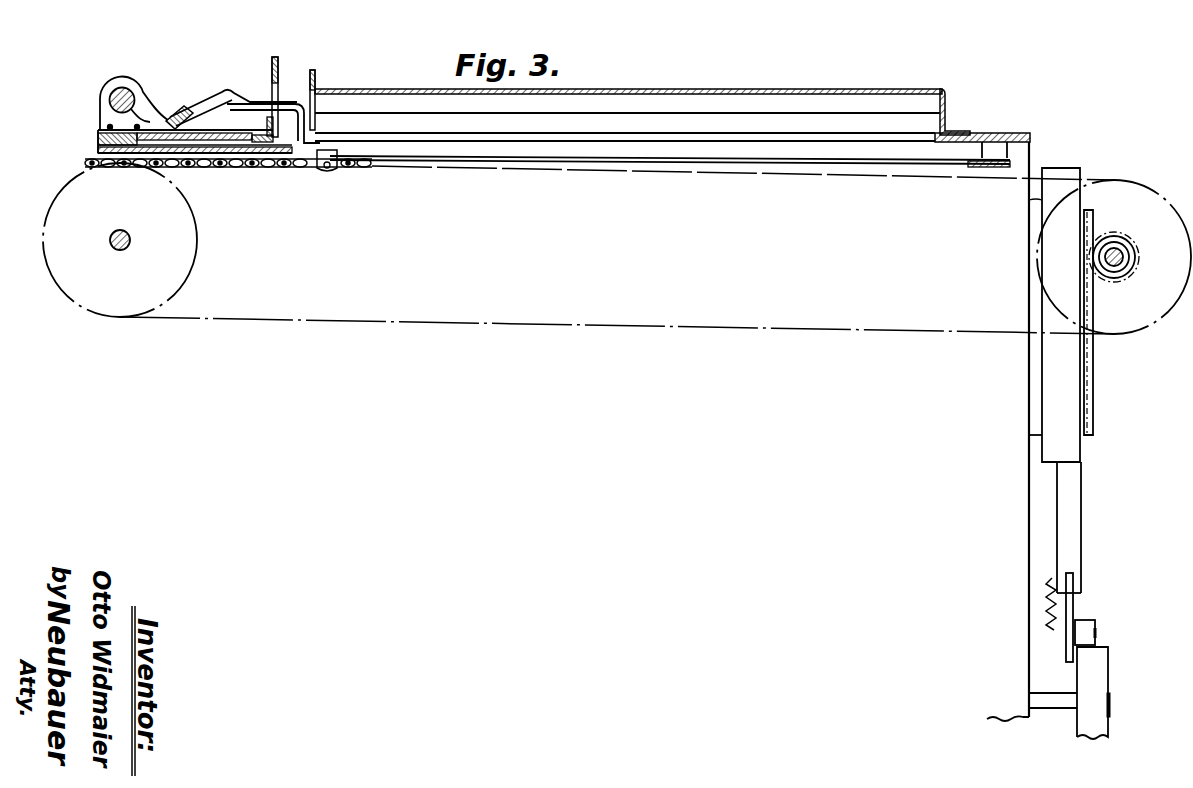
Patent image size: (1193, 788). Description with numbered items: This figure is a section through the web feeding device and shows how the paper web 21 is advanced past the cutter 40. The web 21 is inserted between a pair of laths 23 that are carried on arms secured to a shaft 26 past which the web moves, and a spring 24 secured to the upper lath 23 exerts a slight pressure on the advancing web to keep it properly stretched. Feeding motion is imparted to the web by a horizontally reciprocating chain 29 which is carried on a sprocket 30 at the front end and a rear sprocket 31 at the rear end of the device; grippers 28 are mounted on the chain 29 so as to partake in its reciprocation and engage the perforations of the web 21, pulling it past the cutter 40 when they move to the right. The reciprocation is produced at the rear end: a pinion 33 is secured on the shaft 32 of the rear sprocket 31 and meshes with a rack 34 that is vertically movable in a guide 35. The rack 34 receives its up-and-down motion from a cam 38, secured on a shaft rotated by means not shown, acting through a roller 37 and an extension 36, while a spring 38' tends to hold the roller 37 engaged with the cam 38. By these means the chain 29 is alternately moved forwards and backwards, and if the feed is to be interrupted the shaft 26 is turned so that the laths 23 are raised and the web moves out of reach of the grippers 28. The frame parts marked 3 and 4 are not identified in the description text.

The frame base plate 3 is at (908, 138).
The cover plate 4 is at (791, 90).
The paper web 21 is at (77, 100).
The laths 23 is at (190, 112).
The spring 24 is at (207, 92).
The shaft 26 is at (122, 88).
The grippers 28 is at (243, 105).
The chain 29 is at (302, 170).
The sprocket 30 is at (162, 306).
The rear sprocket 31 is at (1156, 321).
The shaft 32 is at (1119, 253).
The pinion 33 is at (1129, 273).
The rack 34 is at (1094, 389).
The guide 35 is at (1068, 451).
The extension 36 is at (1072, 605).
The roller 37 is at (1096, 634).
The cam 38 is at (1118, 693).
The spring 38' is at (1024, 609).
The cutter 40 is at (279, 62).